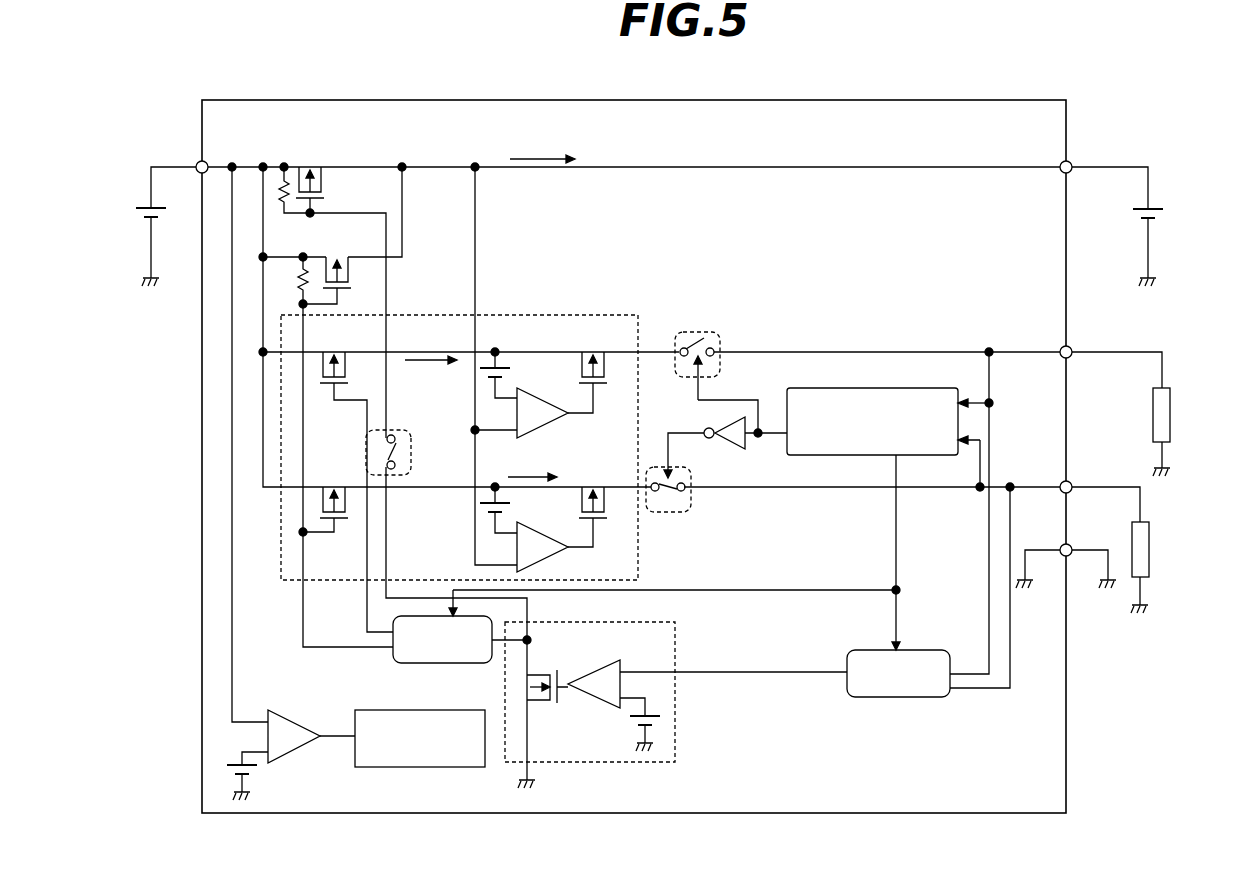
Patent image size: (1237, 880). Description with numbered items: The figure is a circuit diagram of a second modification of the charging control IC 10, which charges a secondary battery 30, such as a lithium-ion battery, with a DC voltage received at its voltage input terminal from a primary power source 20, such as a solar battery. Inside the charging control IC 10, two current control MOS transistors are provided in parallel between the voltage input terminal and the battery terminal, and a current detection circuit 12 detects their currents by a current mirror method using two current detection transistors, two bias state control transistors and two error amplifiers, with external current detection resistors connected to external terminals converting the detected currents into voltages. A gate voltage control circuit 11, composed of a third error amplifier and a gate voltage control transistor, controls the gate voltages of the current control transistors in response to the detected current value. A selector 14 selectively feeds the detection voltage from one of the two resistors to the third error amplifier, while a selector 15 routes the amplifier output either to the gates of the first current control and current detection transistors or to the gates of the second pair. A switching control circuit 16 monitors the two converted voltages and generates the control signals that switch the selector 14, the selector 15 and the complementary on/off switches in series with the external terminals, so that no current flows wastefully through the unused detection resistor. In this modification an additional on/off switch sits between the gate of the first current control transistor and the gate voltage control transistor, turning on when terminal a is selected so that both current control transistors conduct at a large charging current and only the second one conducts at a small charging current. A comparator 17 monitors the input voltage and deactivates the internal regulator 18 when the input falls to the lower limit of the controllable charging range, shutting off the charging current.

The charging control IC 10 is at (748, 100).
The gate voltage control circuit 11 is at (676, 731).
The current detection circuit 12 is at (543, 315).
The selector 14 is at (905, 698).
The selector 15 is at (460, 664).
The switching control circuit 16 is at (888, 389).
The comparator 17 is at (292, 712).
The internal regulator 18 is at (425, 768).
The primary power source 20 is at (140, 205).
The secondary battery 30 is at (1150, 207).